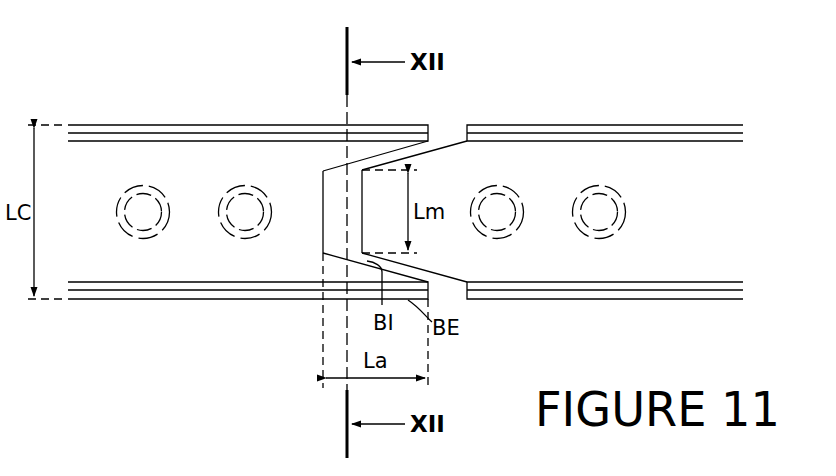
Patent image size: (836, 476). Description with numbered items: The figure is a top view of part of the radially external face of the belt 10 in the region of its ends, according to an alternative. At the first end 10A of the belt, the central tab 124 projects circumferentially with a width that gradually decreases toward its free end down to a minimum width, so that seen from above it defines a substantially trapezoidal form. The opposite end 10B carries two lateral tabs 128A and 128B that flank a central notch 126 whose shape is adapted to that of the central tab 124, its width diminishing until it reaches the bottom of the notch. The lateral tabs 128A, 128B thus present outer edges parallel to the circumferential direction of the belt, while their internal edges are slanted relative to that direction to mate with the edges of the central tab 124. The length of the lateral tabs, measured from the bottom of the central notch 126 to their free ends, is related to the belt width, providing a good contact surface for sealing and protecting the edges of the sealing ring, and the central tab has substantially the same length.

The belt 10 is at (405, 159).
The first end of the belt 10A is at (528, 121).
The second end of the belt 10B is at (333, 121).
The central tab 124 is at (373, 184).
The central notch 126 is at (340, 187).
The lateral tab 128A is at (337, 255).
The lateral tab 128B is at (377, 157).